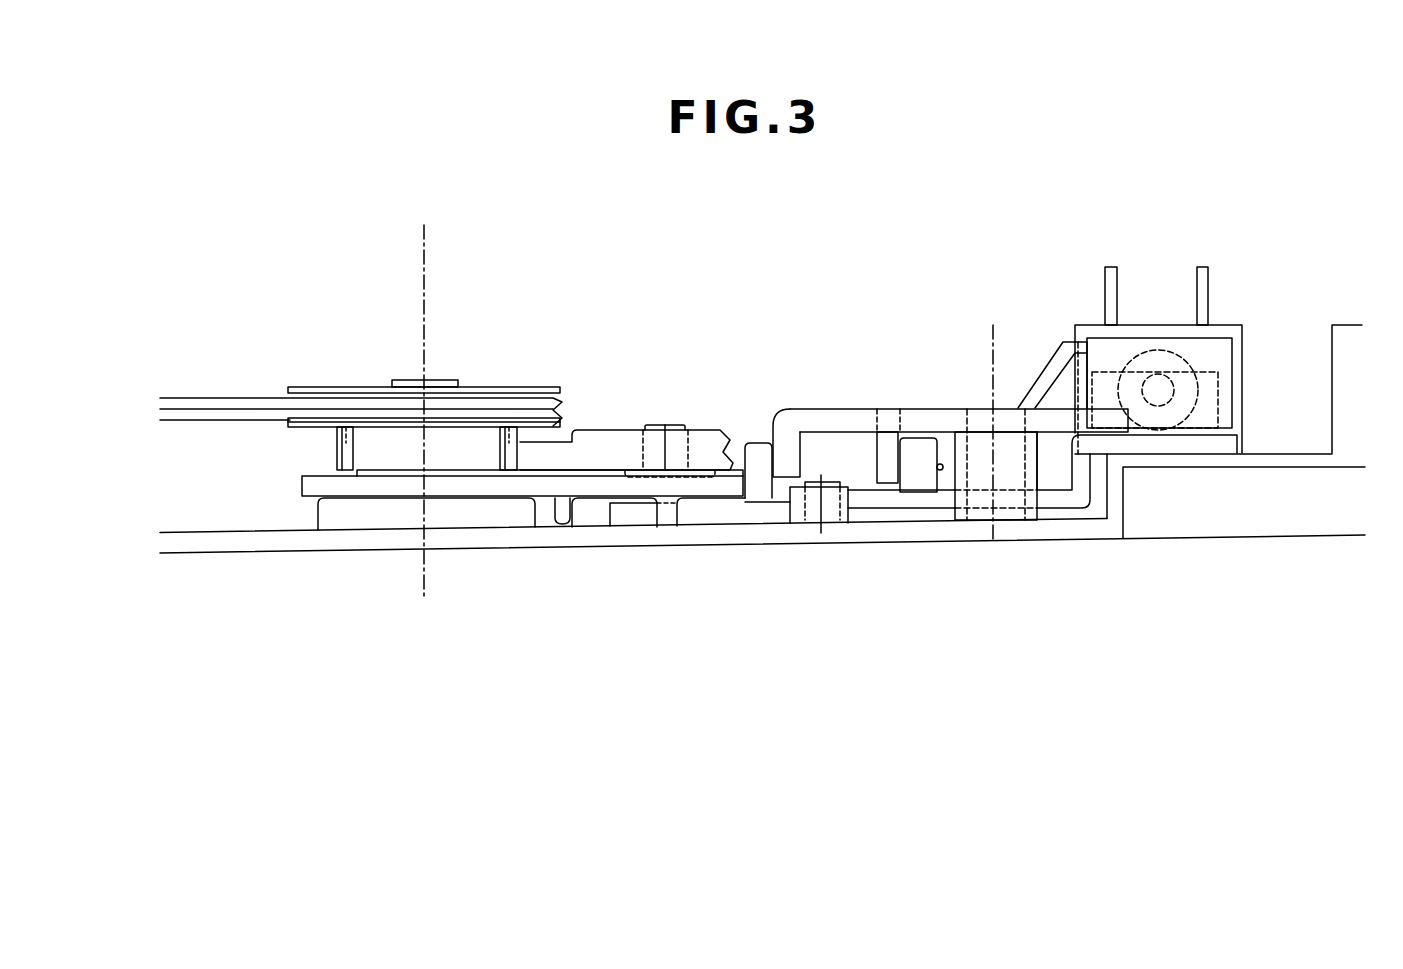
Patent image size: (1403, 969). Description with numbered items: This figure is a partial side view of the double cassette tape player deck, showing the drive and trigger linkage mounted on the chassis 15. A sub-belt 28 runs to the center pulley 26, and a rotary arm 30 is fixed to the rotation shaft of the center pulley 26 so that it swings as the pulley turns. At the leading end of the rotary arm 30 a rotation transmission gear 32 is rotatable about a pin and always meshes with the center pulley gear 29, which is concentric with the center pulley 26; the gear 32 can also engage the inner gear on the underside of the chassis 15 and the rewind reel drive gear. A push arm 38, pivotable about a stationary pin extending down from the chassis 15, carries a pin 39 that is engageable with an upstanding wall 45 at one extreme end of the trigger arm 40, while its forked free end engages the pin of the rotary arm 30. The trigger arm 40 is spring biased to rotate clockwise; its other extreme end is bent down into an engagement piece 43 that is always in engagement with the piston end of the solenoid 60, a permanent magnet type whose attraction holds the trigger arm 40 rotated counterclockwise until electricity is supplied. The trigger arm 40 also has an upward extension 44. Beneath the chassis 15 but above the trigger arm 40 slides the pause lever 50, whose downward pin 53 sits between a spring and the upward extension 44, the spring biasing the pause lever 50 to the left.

The chassis 15 is at (387, 541).
The center pulley 26 is at (345, 388).
The sub-belt 28 is at (195, 405).
The center pulley gear 29 is at (343, 458).
The rotary arm 30 is at (563, 484).
The rotation transmission gear 32 is at (625, 447).
The push arm 38 is at (740, 512).
The pin 39 is at (763, 458).
The trigger arm 40 is at (937, 420).
The engagement piece 43 is at (1008, 472).
The upward extension 44 is at (888, 460).
The upstanding wall 45 is at (790, 460).
The pause lever 50 is at (935, 500).
The downward pin 53 is at (918, 478).
The solenoid 60 is at (1155, 330).